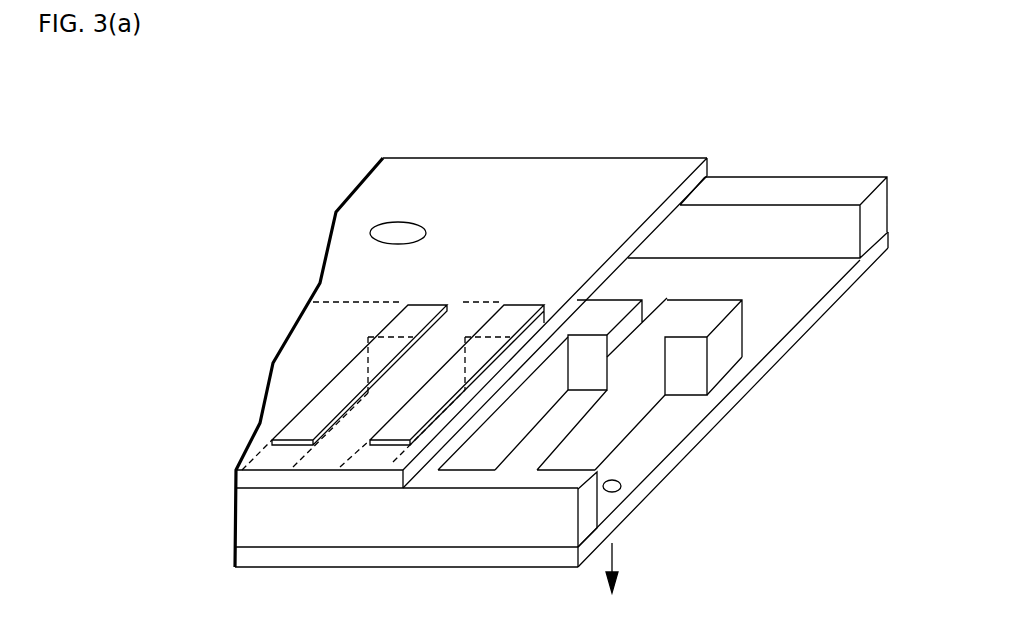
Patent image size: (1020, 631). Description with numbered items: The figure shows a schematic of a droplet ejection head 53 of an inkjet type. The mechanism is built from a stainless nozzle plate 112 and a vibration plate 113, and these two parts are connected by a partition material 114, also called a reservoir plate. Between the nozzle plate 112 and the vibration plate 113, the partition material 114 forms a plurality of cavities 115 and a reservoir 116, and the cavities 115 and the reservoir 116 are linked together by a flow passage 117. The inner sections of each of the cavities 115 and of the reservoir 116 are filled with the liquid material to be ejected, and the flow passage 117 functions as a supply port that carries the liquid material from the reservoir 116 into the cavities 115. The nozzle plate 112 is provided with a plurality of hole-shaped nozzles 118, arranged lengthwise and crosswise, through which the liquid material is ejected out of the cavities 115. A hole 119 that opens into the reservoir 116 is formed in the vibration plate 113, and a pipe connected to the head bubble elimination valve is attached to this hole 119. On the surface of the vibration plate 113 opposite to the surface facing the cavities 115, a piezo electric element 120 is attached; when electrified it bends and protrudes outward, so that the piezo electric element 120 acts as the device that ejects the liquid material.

The droplet ejection head 53 is at (481, 150).
The nozzle plate 112 is at (800, 329).
The vibration plate 113 is at (421, 466).
The partition material 114 is at (632, 416).
The cavities 115 is at (547, 379).
The reservoir 116 is at (779, 270).
The flow passage 117 is at (629, 324).
The nozzles 118 is at (623, 483).
The hole 119 is at (388, 237).
The piezo electric element 120 is at (321, 411).